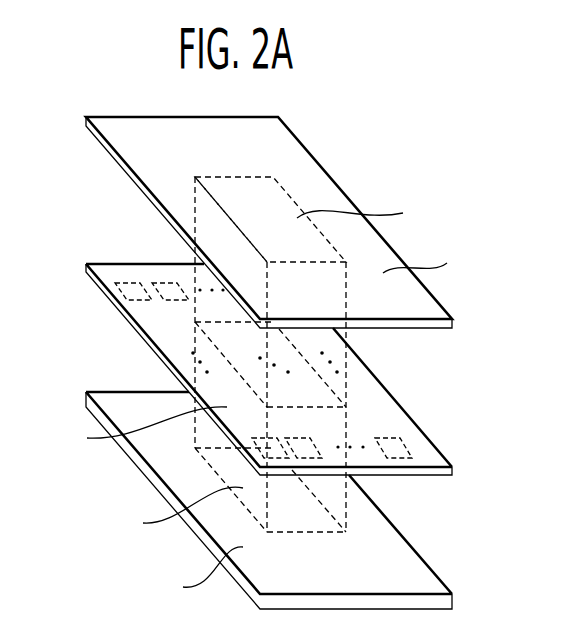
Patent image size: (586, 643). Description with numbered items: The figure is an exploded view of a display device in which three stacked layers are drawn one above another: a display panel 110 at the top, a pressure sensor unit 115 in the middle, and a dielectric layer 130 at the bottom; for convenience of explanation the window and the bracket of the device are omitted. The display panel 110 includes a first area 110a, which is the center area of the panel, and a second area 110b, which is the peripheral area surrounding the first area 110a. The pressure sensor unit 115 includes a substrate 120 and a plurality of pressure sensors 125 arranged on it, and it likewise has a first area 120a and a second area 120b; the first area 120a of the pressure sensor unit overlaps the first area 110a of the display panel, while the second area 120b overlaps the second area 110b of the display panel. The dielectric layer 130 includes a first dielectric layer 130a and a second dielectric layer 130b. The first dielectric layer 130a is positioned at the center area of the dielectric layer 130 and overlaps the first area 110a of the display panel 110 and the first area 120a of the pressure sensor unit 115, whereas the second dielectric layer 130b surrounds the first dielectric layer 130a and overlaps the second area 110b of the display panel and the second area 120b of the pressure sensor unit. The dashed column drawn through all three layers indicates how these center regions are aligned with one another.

The display panel 110 is at (308, 150).
The first area of the display panel 110a is at (370, 215).
The second area of the display panel 110b is at (435, 263).
The pressure sensor unit 115 is at (420, 395).
The substrate 120 is at (436, 447).
The first area of the pressure sensor unit 120a is at (215, 338).
The second area of the pressure sensor unit 120b is at (133, 430).
The pressure sensors 125 is at (132, 282).
The dielectric layer 130 is at (452, 600).
The first dielectric layer 130a is at (171, 513).
The second dielectric layer 130b is at (192, 574).